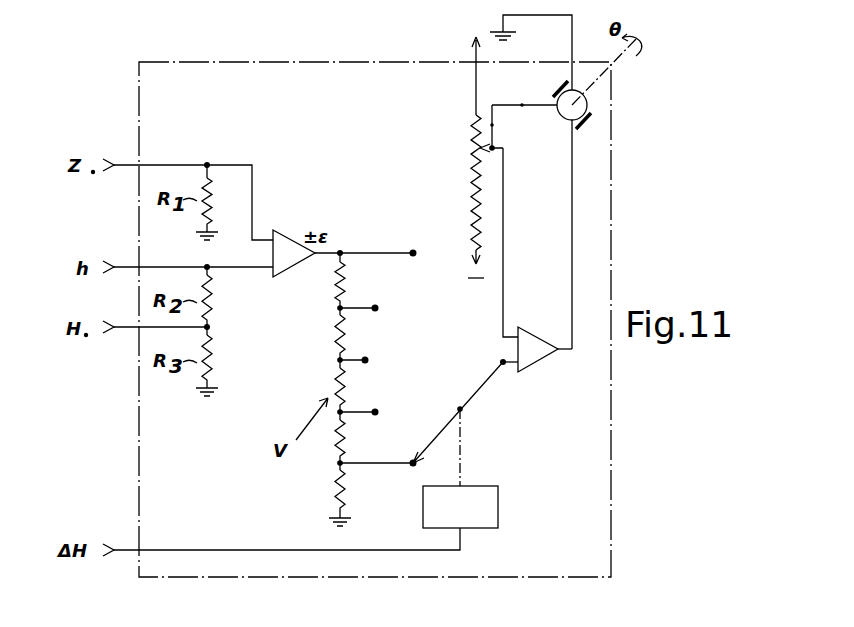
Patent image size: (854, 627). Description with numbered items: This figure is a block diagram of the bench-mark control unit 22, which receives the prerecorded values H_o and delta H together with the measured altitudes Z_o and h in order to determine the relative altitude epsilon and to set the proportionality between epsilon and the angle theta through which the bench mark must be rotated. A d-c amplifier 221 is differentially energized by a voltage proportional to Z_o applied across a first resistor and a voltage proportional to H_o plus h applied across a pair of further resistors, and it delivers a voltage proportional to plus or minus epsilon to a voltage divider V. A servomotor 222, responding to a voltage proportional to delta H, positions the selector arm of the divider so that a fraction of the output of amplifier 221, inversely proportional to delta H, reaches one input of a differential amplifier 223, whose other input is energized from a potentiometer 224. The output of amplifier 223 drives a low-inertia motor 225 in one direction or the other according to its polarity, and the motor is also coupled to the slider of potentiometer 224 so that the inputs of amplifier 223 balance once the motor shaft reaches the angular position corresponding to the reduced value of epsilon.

The control unit 22 is at (165, 57).
The d-c amplifier 221 is at (285, 230).
The servomotor 222 is at (499, 508).
The differential amplifier 223 is at (537, 355).
The potentiometer 224 is at (470, 131).
The motor 225 is at (583, 108).